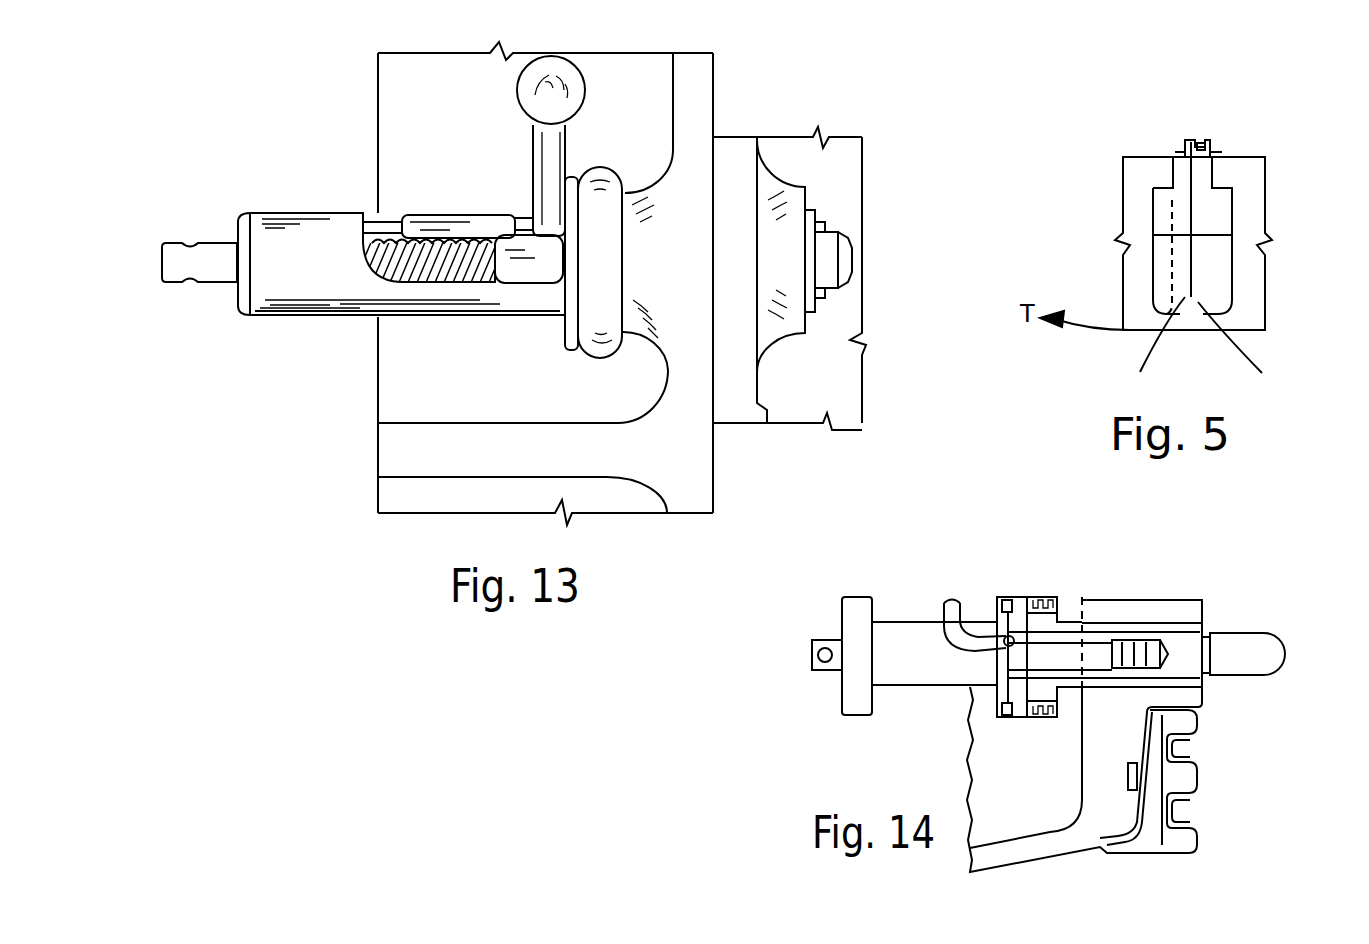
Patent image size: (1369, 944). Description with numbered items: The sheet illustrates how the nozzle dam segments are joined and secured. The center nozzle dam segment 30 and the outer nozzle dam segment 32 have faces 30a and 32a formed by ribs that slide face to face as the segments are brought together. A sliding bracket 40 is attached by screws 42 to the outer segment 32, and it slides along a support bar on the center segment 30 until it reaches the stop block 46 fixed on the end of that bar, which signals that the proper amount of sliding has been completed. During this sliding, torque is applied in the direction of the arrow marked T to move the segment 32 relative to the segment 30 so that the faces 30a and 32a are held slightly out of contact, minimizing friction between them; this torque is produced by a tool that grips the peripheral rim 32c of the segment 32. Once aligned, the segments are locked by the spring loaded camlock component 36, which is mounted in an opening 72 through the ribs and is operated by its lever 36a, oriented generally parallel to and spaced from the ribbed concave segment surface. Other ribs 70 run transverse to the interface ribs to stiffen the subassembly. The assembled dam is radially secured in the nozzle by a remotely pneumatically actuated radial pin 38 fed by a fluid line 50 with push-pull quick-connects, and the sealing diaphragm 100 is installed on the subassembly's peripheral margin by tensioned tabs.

In FIG. 13, the center nozzle dam segment 30 is at (645, 126).
In FIG. 5, the center nozzle dam segment 30 is at (1254, 177).
In FIG. 13, the face 30a is at (714, 112).
In FIG. 5, the face 30a is at (1198, 268).
In FIG. 13, the outer nozzle dam segment 32 is at (840, 189).
In FIG. 5, the outer nozzle dam segment 32 is at (1133, 174).
In FIG. 13, the face 32a is at (713, 396).
In FIG. 14, the peripheral rim 32c is at (1080, 607).
In FIG. 13, the spring loaded camlock component 36 is at (312, 178).
In FIG. 13, the lever 36a is at (533, 187).
In FIG. 14, the radial pin 38 is at (1242, 632).
In FIG. 5, the sliding bracket 40 is at (1190, 140).
In FIG. 5, the screw 42 is at (1213, 152).
In FIG. 5, the stop block 46 is at (1207, 147).
In FIG. 14, the fluid line 50 is at (948, 606).
In FIG. 13, the transverse stiffening rib 70 is at (378, 440).
In FIG. 5, the opening 72 is at (1212, 236).
In FIG. 14, the sealing diaphragm 100 is at (1198, 764).